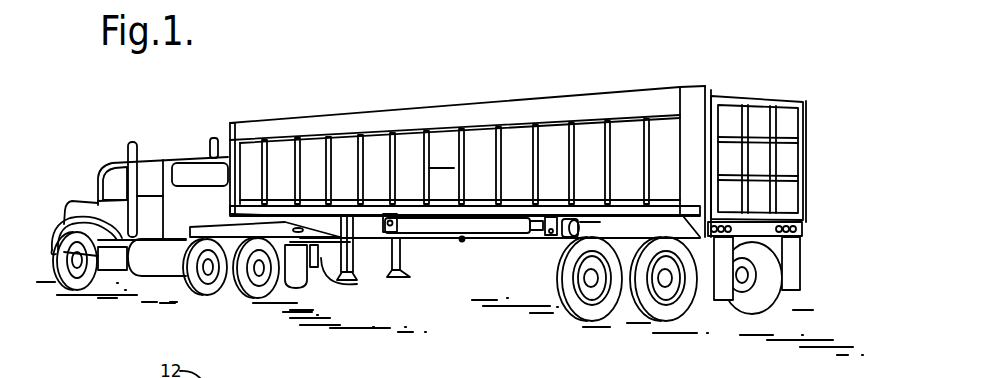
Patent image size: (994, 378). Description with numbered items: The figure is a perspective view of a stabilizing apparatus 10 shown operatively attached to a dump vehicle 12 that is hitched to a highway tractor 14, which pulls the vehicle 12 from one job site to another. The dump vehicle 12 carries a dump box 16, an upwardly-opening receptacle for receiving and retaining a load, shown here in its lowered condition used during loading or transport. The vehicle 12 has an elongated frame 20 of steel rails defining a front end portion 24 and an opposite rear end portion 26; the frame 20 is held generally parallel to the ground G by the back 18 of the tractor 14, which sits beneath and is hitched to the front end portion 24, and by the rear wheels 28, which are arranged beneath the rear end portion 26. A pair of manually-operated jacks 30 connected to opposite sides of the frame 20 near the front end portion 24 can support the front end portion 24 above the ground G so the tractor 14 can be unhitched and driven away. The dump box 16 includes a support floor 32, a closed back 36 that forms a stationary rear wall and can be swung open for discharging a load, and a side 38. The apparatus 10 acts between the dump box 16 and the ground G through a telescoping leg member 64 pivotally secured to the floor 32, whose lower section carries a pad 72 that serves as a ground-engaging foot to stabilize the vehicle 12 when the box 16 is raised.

The stabilizing apparatus 10 is at (491, 252).
The dump vehicle 12 is at (506, 74).
The highway tractor 14 is at (177, 140).
The dump box 16 is at (613, 86).
The back of the tractor 18 is at (322, 243).
The elongated frame 20 is at (432, 235).
The front end portion 24 is at (233, 214).
The rear end portion 26 is at (796, 243).
The rear wheels 28 is at (684, 321).
The manually-operated jacks 30 is at (350, 282).
The support floor 32 is at (595, 222).
The back 36 is at (788, 157).
The side 38 is at (441, 160).
The leg member 64 is at (462, 239).
The pad 72 is at (567, 240).
The ground G is at (780, 334).